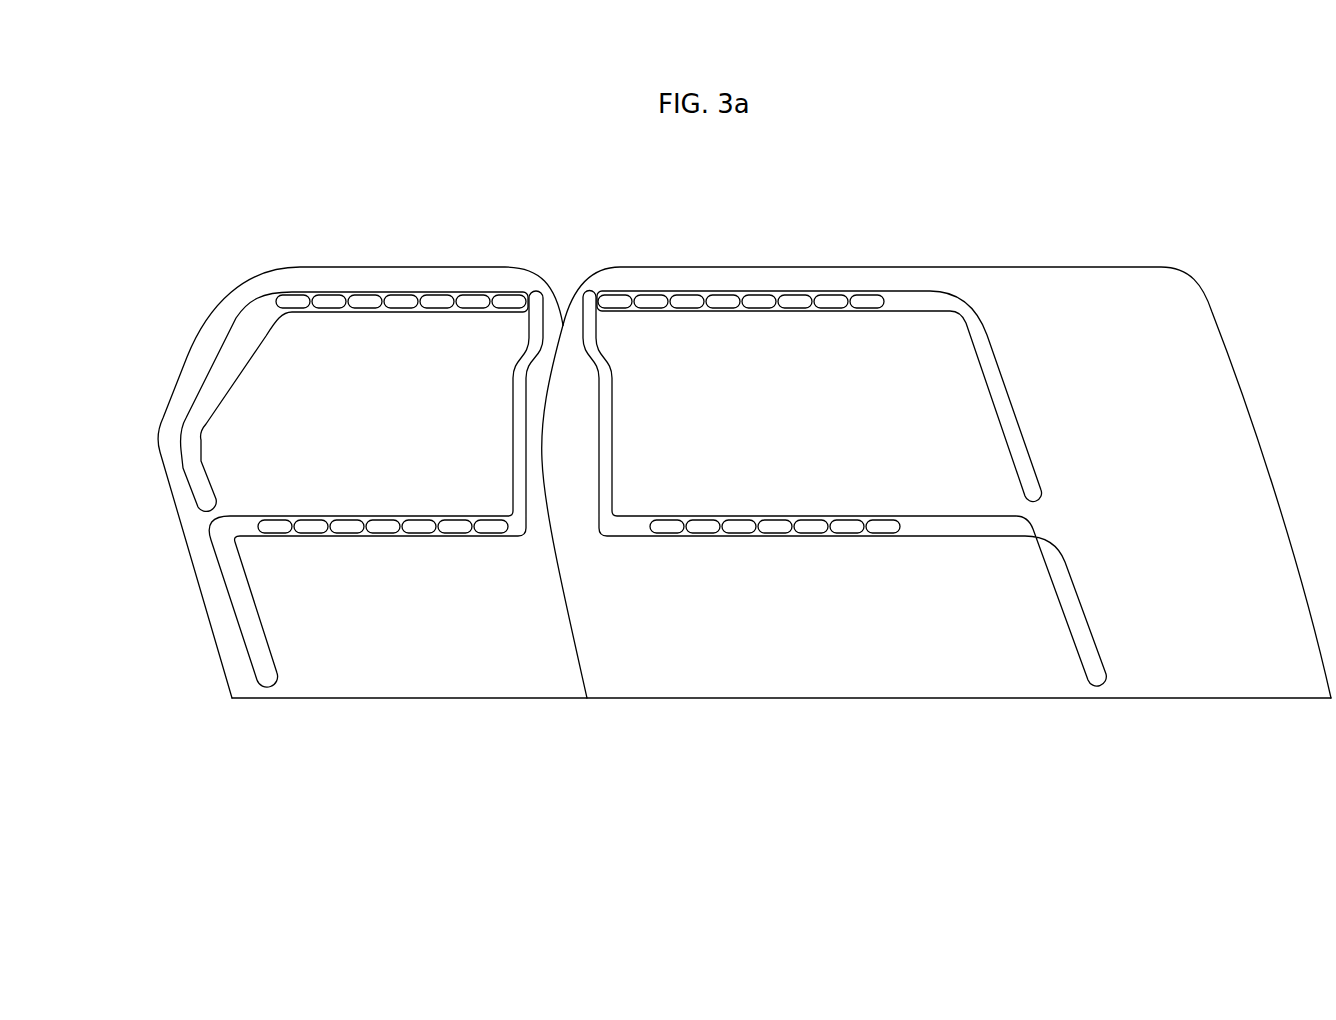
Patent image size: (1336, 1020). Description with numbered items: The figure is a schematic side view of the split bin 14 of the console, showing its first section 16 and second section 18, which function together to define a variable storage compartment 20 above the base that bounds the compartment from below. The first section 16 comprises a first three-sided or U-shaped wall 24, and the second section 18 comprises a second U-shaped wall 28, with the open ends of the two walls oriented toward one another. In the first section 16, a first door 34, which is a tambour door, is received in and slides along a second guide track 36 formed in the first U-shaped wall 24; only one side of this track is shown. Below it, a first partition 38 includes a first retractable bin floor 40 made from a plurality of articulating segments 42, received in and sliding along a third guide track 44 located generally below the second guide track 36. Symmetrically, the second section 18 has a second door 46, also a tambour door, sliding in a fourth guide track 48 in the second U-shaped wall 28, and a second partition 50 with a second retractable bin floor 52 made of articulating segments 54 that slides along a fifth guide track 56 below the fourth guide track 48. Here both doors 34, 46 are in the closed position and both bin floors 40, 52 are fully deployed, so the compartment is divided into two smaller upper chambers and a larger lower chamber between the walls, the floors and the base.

The bin 14 is at (881, 411).
The first section 16 is at (947, 445).
The second section 18 is at (308, 448).
The variable storage compartment 20 is at (427, 672).
The first U-shaped wall 24 is at (1203, 332).
The second U-shaped wall 28 is at (187, 357).
The first door 34 is at (723, 303).
The second guide track 36 is at (933, 302).
The first partition 38 is at (612, 435).
The first retractable bin floor 40 is at (765, 540).
The articulating segments 42 is at (703, 527).
The third guide track 44 is at (1067, 587).
The second door 46 is at (400, 300).
The fourth guide track 48 is at (200, 407).
The second partition 50 is at (513, 427).
The second retractable bin floor 52 is at (383, 525).
The articulating segments 54 is at (415, 530).
The fifth guide track 56 is at (240, 603).